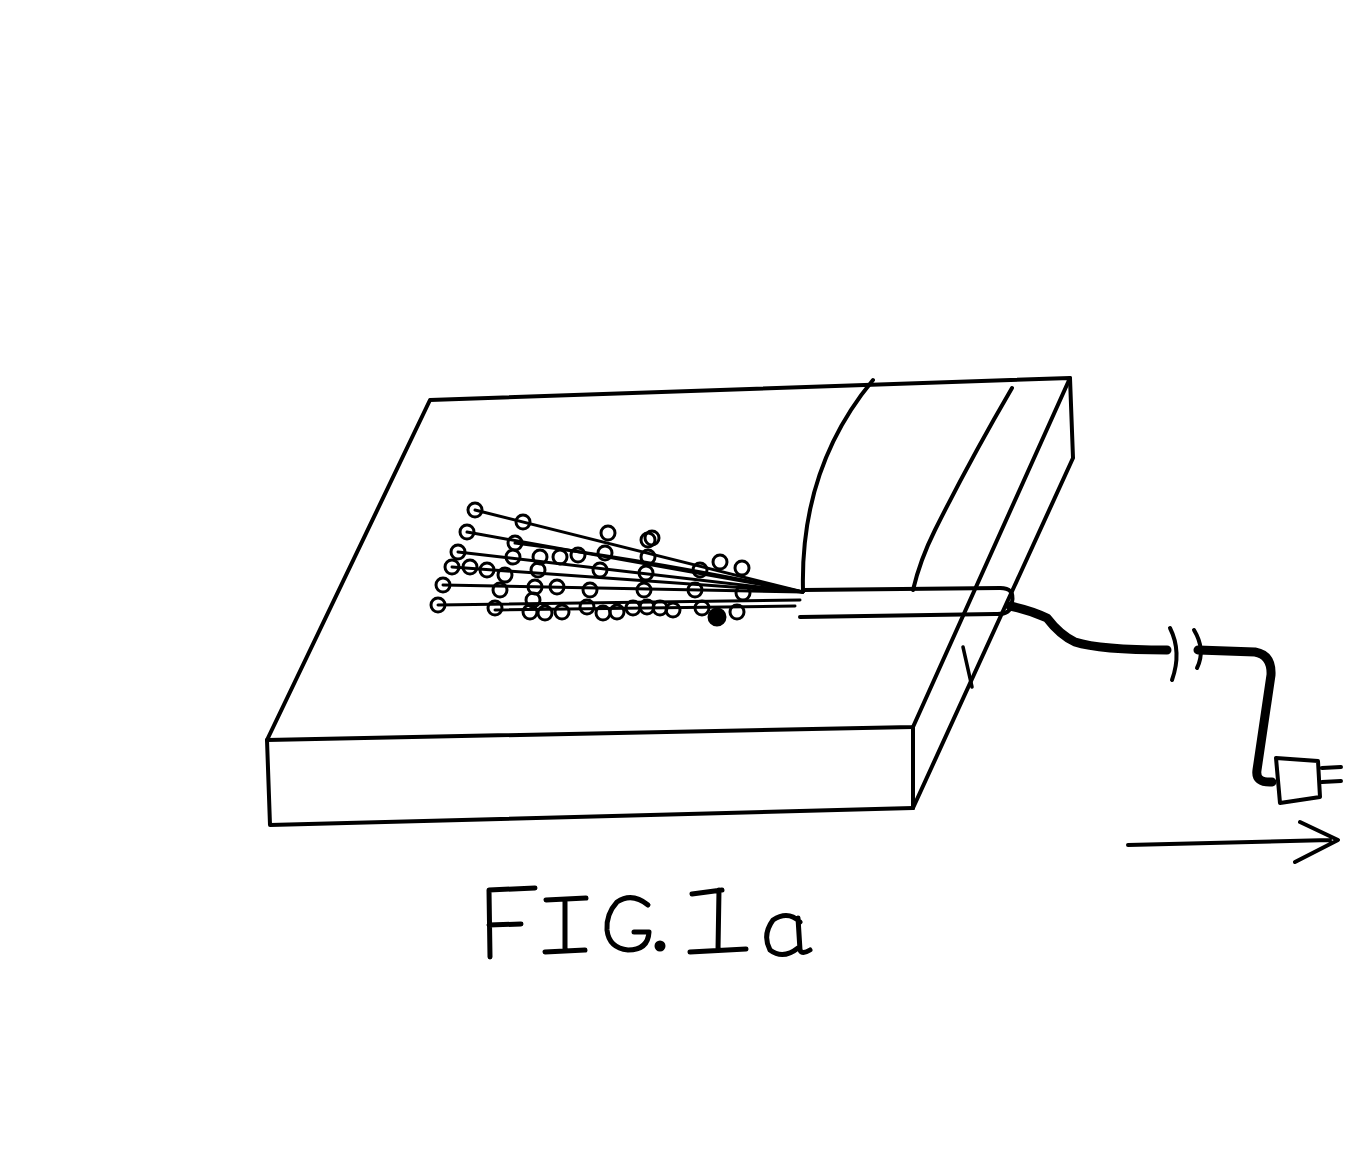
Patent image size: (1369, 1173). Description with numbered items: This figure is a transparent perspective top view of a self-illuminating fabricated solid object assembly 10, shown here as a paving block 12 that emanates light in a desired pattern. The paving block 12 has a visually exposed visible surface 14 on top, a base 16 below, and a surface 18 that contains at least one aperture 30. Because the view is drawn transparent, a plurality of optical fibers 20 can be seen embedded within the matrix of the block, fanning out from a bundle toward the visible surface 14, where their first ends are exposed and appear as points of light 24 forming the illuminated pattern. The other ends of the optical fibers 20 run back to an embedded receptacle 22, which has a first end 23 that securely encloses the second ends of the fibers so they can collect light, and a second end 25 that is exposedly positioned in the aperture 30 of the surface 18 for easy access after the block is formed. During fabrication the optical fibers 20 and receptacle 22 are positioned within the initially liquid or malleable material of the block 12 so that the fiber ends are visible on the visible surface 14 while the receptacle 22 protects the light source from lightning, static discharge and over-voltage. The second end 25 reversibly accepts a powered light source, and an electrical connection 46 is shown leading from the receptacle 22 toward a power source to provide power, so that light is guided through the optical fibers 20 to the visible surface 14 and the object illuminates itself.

The self-illuminating fabricated solid object assembly 10 is at (736, 158).
The fabricated solid block 12 is at (468, 386).
The visible surface 14 is at (601, 432).
The base 16 is at (313, 830).
The surface containing aperture 18 is at (930, 719).
The optical fibers 20 is at (470, 613).
The receptacle 22 is at (1012, 388).
The first end of receptacle 23 is at (873, 380).
The point of light 24 is at (655, 528).
The second end of receptacle 25 is at (1003, 617).
The aperture 30 is at (1008, 562).
The electrical connection 46 is at (1133, 660).